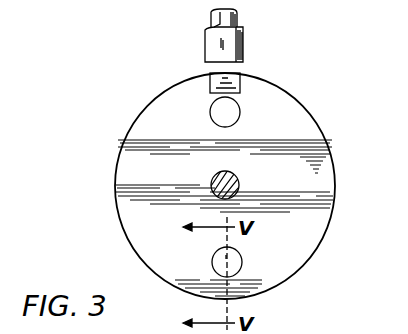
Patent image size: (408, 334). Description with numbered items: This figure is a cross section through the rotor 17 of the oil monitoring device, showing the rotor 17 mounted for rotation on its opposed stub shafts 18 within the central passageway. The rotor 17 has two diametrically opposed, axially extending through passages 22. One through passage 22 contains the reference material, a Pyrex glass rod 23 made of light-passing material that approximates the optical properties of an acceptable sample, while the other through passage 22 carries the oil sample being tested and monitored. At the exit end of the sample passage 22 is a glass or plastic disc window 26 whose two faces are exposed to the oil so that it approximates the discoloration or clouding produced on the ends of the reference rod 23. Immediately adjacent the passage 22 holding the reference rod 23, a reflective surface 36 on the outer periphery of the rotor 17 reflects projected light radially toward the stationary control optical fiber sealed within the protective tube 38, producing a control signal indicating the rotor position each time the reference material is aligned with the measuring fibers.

The rotor 17 is at (185, 179).
The stub shaft 18 is at (238, 178).
The through passage 22 is at (239, 103).
The Pyrex glass rod 23 is at (223, 113).
The disc window 26 is at (236, 264).
The reflective surface 36 is at (234, 84).
The protective tube 38 is at (237, 43).